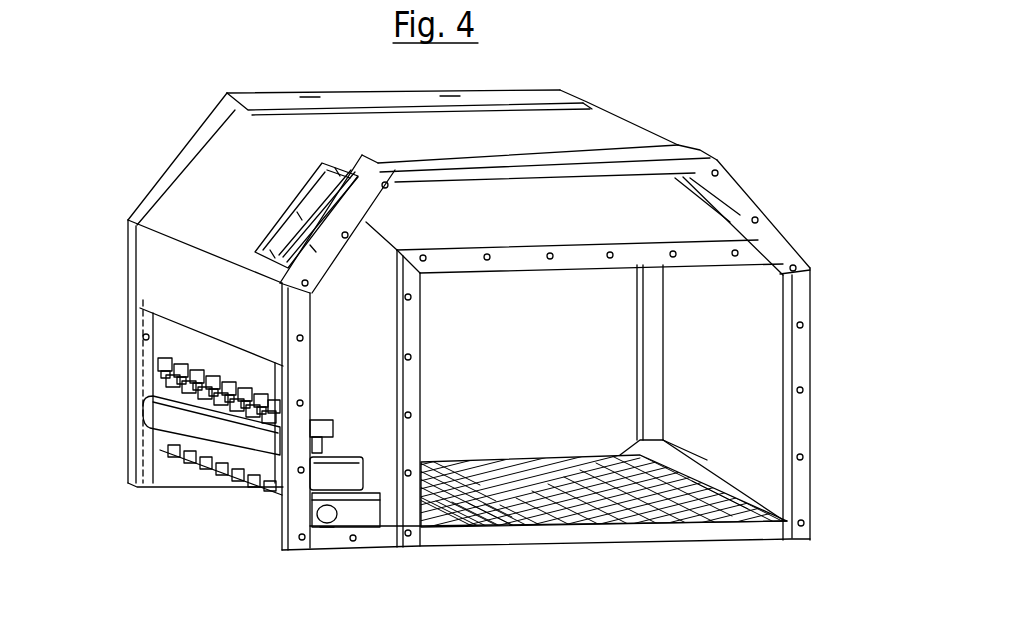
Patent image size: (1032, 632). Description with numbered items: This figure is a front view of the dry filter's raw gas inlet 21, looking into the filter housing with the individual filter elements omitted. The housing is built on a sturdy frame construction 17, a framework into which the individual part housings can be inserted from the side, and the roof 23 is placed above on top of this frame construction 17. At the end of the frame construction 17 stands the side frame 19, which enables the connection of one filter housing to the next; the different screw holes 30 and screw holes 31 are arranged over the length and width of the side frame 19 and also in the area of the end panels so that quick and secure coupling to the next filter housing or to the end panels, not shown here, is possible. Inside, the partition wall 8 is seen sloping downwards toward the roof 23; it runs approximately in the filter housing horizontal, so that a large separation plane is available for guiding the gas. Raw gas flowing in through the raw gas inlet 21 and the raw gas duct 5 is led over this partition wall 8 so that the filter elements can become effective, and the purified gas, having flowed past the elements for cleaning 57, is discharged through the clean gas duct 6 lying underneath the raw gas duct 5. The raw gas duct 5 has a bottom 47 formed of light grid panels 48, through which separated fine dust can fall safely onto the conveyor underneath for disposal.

The raw gas duct 5 is at (519, 371).
The clean gas duct 6 is at (358, 330).
The partition wall 8 is at (627, 218).
The frame construction 17 is at (333, 525).
The side frame 19 is at (298, 508).
The raw gas inlet 21 is at (597, 364).
The roof 23 is at (612, 133).
The screw holes 30 is at (143, 337).
The screw holes 31 is at (810, 540).
The bottom 47 is at (620, 530).
The light grid panels 48 is at (585, 503).
The elements for cleaning 57 is at (208, 445).